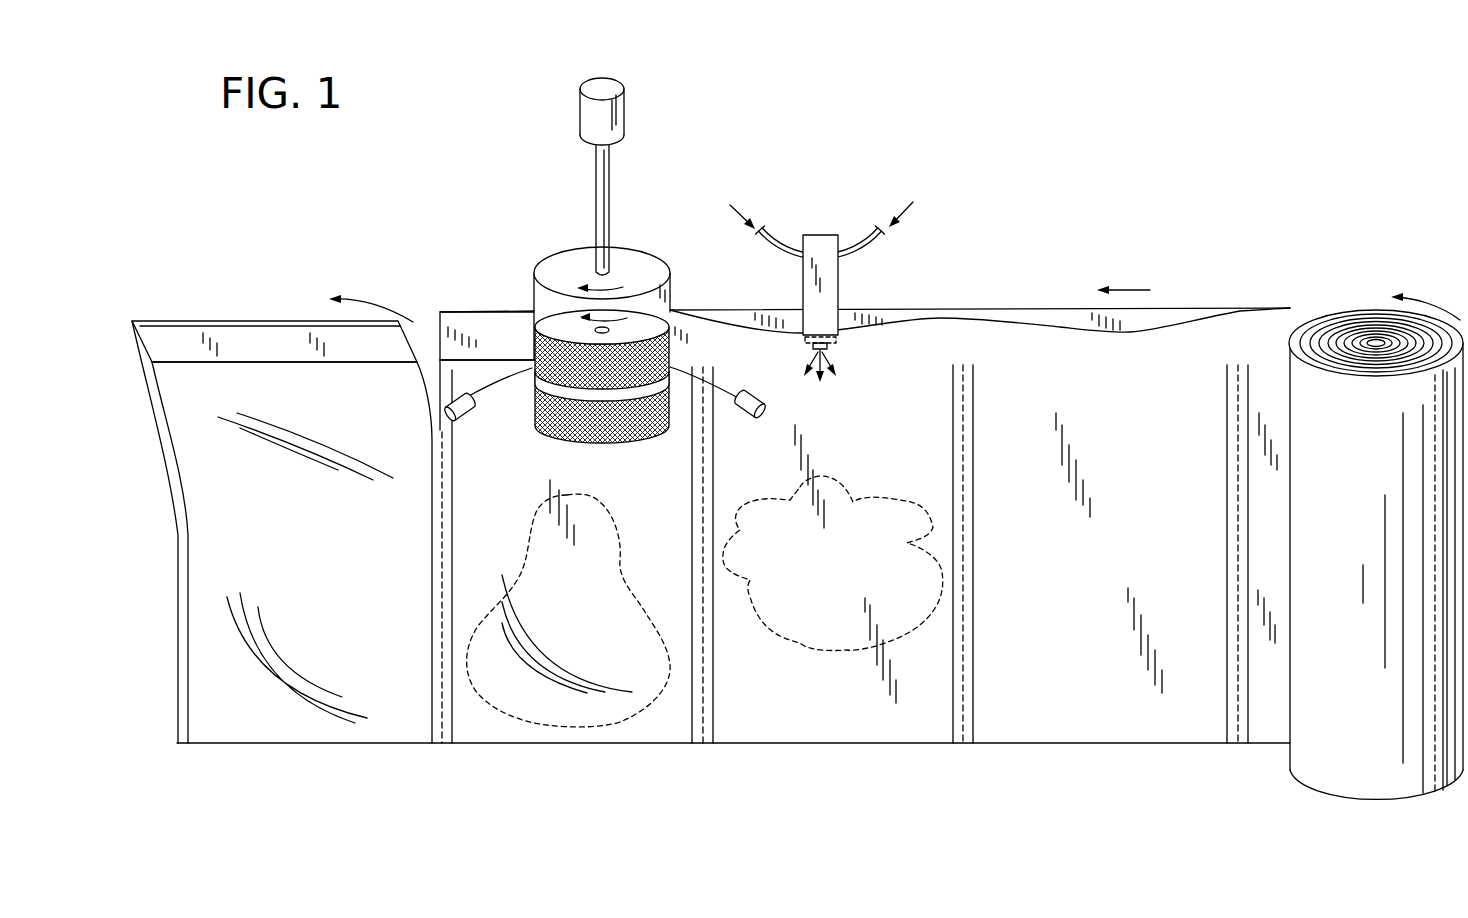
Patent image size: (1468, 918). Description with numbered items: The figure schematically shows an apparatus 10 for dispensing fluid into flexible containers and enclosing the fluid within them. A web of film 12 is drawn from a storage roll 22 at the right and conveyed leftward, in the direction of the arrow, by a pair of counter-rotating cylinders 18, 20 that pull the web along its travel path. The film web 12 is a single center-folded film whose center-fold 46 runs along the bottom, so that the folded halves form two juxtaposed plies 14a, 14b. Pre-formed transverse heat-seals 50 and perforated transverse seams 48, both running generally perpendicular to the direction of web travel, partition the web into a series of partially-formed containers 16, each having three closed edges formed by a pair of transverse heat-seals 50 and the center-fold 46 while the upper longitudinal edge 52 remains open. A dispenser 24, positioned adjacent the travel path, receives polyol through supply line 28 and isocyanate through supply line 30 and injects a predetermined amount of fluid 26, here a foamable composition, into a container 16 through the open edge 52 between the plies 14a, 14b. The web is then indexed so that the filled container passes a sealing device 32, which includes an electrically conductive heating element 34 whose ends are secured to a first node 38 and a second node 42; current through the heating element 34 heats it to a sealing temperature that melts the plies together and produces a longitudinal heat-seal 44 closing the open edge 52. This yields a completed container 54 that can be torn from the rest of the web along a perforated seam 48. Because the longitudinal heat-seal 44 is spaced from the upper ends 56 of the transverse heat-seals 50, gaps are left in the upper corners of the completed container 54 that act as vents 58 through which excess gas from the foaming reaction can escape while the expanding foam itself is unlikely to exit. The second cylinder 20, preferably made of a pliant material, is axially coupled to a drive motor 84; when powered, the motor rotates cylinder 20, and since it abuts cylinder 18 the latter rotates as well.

The apparatus 10 is at (1133, 212).
The film web 12 is at (1100, 717).
The first film ply 14a is at (1030, 311).
The second film ply 14b is at (1155, 331).
The partially-formed flexible container 16 is at (770, 700).
The first cylinder 18 is at (550, 327).
The second cylinder 20 is at (558, 267).
The storage roll 22 is at (1352, 782).
The dispenser 24 is at (818, 236).
The fluid 26 is at (832, 360).
The supply line 28 is at (860, 250).
The supply line 30 is at (780, 246).
The sealing device 32 is at (656, 213).
The heating element 34 is at (683, 375).
The first node 38 is at (463, 416).
The second node 42 is at (743, 416).
The longitudinal heat-seal 44 is at (288, 363).
The center-fold 46 is at (872, 745).
The perforated transverse seam 48 is at (442, 720).
The transverse heat-seal 50 is at (973, 572).
The upper longitudinal edge 52 is at (937, 314).
The completed container 54 is at (215, 500).
The upper end of transverse heat-seal 56 is at (445, 377).
The vent 58 is at (180, 370).
The drive motor 84 is at (626, 113).